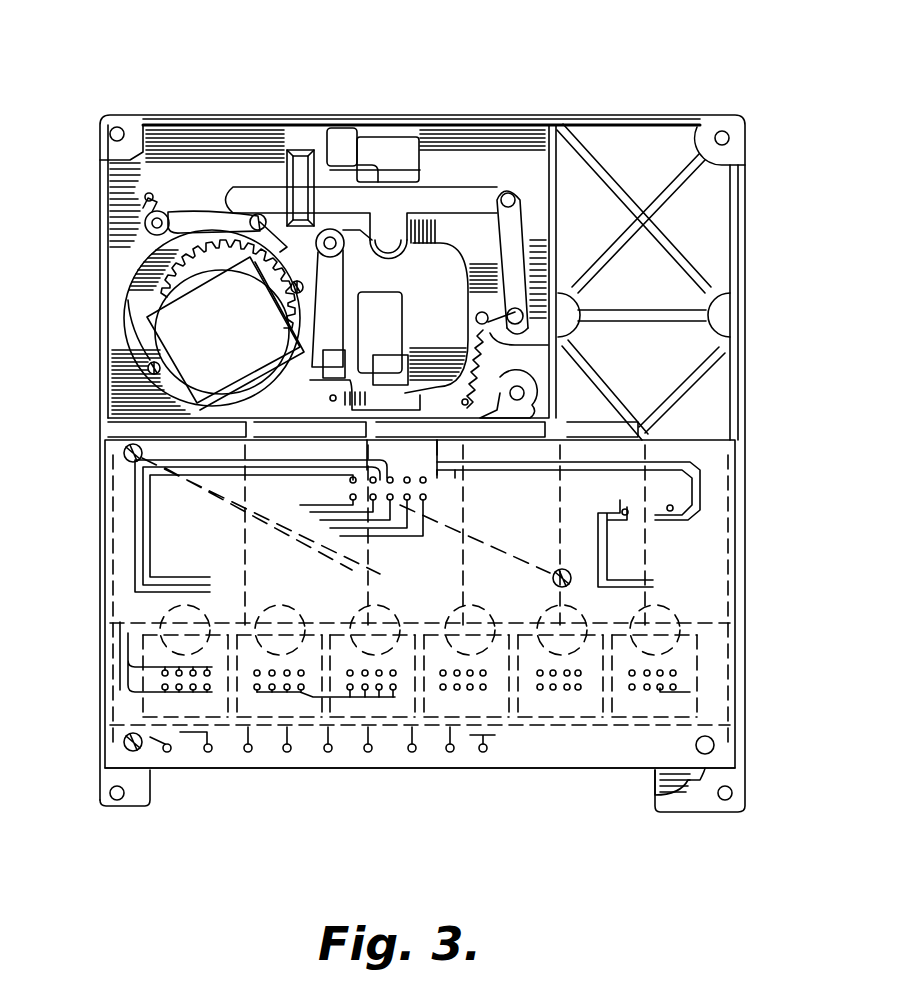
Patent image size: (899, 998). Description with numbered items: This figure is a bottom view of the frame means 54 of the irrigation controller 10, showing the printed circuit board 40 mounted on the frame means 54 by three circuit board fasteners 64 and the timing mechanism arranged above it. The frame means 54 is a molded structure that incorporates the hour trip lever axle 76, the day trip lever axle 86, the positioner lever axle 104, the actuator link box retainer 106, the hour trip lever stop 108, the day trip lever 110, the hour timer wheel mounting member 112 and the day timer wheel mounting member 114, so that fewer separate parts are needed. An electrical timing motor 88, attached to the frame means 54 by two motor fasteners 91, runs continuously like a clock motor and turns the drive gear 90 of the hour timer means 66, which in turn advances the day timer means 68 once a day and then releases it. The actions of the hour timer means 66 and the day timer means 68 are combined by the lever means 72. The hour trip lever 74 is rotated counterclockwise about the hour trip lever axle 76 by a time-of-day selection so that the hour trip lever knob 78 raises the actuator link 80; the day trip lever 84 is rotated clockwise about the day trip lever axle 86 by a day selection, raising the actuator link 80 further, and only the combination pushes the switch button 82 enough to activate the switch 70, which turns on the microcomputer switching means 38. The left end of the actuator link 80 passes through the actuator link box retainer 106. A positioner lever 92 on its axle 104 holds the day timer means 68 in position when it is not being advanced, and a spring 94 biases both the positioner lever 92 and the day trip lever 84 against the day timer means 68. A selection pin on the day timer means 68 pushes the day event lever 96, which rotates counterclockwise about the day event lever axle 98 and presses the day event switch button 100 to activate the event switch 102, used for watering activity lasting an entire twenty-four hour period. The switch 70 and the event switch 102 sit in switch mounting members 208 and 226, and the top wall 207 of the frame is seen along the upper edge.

The irrigation controller 10 is at (655, 86).
The microcomputer switching means 38 is at (712, 674).
The printed circuit board 40 is at (430, 770).
The frame means 54 is at (742, 270).
The circuit board fasteners 64 is at (133, 457).
The hour timer means 66 is at (152, 258).
The day timer means 68 is at (533, 265).
The switch 70 is at (412, 137).
The lever means 72 is at (527, 192).
The hour trip lever 74 is at (176, 214).
The hour trip lever axle 76 is at (148, 218).
The hour trip lever knob 78 is at (255, 213).
The actuator link 80 is at (257, 186).
The switch button 82 is at (388, 159).
The day trip lever 84 is at (515, 237).
The day trip lever axle 86 is at (537, 320).
The electrical timing motor 88 is at (225, 333).
The drive gear 90 is at (188, 273).
The motor fasteners 91 is at (150, 373).
The positioner lever 92 is at (480, 422).
The spring 94 is at (472, 380).
The day event lever 96 is at (397, 233).
The day event lever axle 98 is at (340, 232).
The day event switch button 100 is at (380, 322).
The event switch 102 is at (408, 352).
The positioner lever axle 104 is at (525, 399).
The actuator link box retainer 106 is at (300, 150).
The hour trip lever stop 108 is at (136, 155).
The day trip lever 110 is at (540, 335).
The hour timer wheel mounting member 112 is at (130, 310).
The day timer wheel mounting member 114 is at (445, 262).
The top wall 207 is at (512, 112).
The switch mounting member 208 is at (342, 128).
The switch mounting member 226 is at (385, 387).